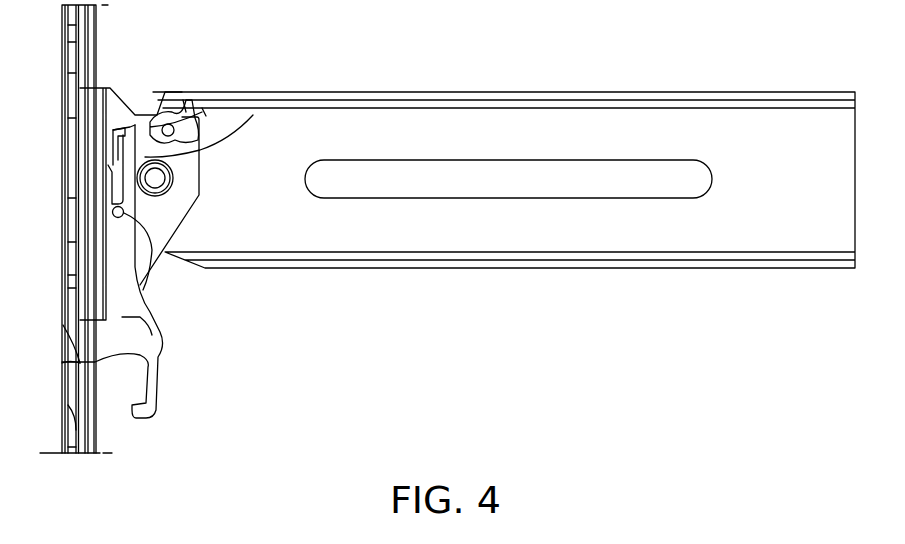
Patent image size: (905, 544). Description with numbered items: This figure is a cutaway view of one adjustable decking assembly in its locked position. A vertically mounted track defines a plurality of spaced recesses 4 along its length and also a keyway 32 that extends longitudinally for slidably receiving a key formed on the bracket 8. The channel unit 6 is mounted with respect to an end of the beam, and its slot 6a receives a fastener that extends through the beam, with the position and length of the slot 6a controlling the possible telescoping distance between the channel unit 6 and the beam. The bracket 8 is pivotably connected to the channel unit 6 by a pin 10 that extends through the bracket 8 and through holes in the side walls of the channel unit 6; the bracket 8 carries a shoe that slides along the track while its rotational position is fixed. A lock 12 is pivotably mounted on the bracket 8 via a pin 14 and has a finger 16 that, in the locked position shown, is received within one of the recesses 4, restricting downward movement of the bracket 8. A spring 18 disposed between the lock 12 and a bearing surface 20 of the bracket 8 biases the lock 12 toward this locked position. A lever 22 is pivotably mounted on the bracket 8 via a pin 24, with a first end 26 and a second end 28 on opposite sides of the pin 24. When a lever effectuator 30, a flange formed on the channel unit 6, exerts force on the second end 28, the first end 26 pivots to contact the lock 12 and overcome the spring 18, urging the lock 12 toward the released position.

The recess 4 is at (63, 328).
The channel unit 6 is at (562, 135).
The slot 6a is at (508, 182).
The bracket 8 is at (110, 104).
The pin 10 is at (170, 185).
The lock 12 is at (163, 345).
The pin 14 is at (155, 262).
The finger 16 is at (72, 350).
The spring 18 is at (115, 170).
The bearing surface 20 is at (100, 142).
The lever 22 is at (153, 123).
The pin 24 is at (202, 112).
The first end 26 is at (253, 115).
The second end 28 is at (190, 113).
The lever effectuator 30 is at (183, 113).
The keyway 32 is at (80, 58).